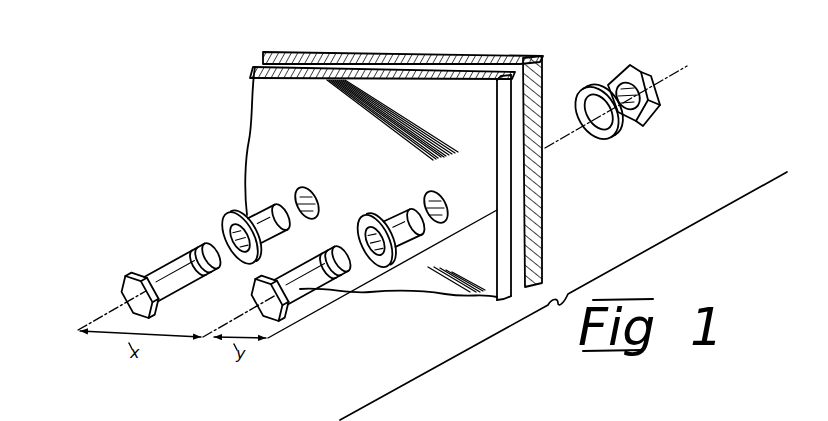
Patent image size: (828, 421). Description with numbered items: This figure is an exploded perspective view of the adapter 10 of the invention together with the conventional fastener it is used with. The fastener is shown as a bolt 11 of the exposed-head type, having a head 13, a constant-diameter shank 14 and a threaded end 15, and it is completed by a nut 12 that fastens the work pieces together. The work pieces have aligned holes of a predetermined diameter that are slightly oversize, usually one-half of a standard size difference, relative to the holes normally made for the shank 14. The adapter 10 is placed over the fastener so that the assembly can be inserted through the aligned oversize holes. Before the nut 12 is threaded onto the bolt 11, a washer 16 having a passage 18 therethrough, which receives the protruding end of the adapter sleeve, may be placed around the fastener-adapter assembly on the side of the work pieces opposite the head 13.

The adapter 10 is at (283, 191).
The bolt 11 is at (154, 271).
The nut 12 is at (657, 105).
The head 13 is at (128, 278).
The shank 14 is at (172, 287).
The threaded end 15 is at (210, 246).
The washer 16 is at (612, 134).
The passage 18 is at (588, 133).